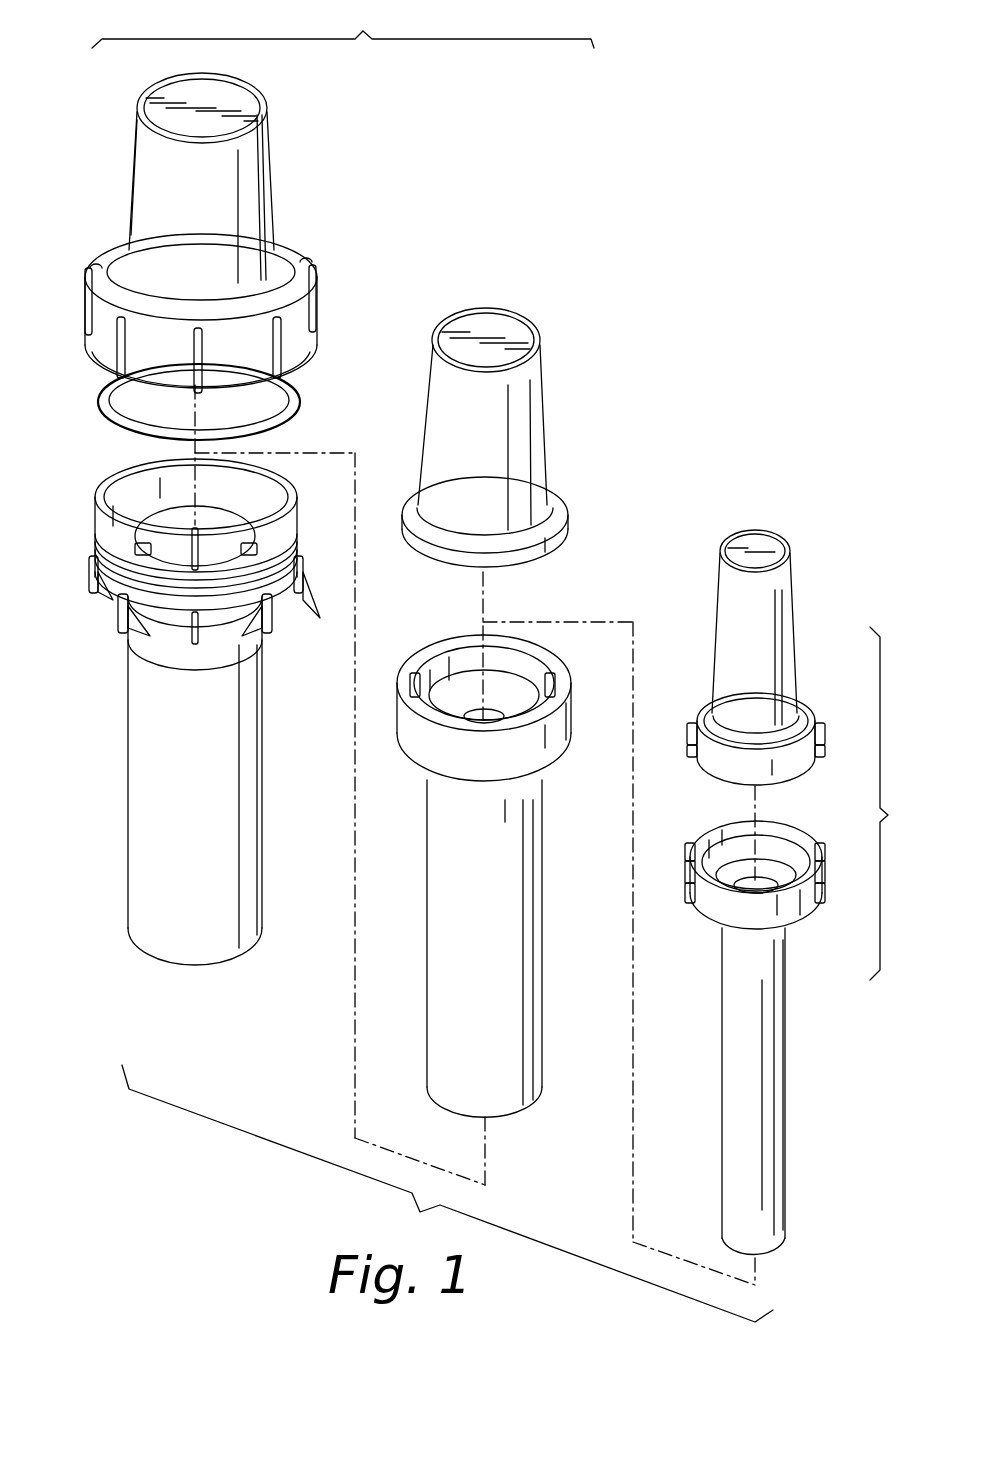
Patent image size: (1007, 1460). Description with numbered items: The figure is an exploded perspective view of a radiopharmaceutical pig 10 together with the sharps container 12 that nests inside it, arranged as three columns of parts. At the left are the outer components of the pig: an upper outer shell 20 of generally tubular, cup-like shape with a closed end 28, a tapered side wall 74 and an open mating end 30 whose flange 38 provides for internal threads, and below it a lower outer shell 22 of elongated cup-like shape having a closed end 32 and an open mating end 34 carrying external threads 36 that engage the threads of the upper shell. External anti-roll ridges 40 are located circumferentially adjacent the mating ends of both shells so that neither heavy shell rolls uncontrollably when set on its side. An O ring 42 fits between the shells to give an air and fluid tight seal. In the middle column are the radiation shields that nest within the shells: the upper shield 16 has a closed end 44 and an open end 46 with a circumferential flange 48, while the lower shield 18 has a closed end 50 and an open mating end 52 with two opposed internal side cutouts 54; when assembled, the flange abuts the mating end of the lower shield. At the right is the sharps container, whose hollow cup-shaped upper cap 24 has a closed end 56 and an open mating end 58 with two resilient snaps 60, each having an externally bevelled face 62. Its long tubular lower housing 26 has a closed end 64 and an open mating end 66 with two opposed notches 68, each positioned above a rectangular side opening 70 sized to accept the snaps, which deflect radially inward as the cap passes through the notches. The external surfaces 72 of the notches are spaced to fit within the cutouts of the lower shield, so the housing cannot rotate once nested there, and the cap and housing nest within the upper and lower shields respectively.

The radiopharmaceutical pig 10 is at (343, 24).
The sharps container 12 is at (894, 803).
The upper shield 16 is at (516, 419).
The lower shield 18 is at (517, 942).
The upper outer shell 20 is at (165, 178).
The lower outer shell 22 is at (162, 774).
The upper cap 24 is at (789, 627).
The lower housing 26 is at (788, 1083).
The closed end 28 is at (225, 95).
The open mating end 30 is at (218, 332).
The closed end 32 is at (173, 960).
The open mating end 34 is at (179, 507).
The external threads 36 is at (164, 562).
The flange 38 is at (218, 270).
The anti-roll ridges 40 is at (181, 438).
The O ring 42 is at (220, 402).
The closed end 44 is at (512, 326).
The open end 46 is at (512, 542).
The circumferential flange 48 is at (514, 502).
The closed end 50 is at (505, 1120).
The open mating end 52 is at (484, 683).
The internal side cutouts 54 is at (486, 691).
The closed end 56 is at (769, 524).
The open mating end 58 is at (780, 750).
The resilient snaps 60 is at (757, 714).
The externally bevelled face 62 is at (756, 768).
The closed end 64 is at (779, 1256).
The open mating end 66 is at (775, 864).
The notches 68 is at (757, 838).
The rectangular side opening 70 is at (754, 902).
The external surfaces 72 is at (754, 876).
The tapered side wall 74 is at (100, 177).